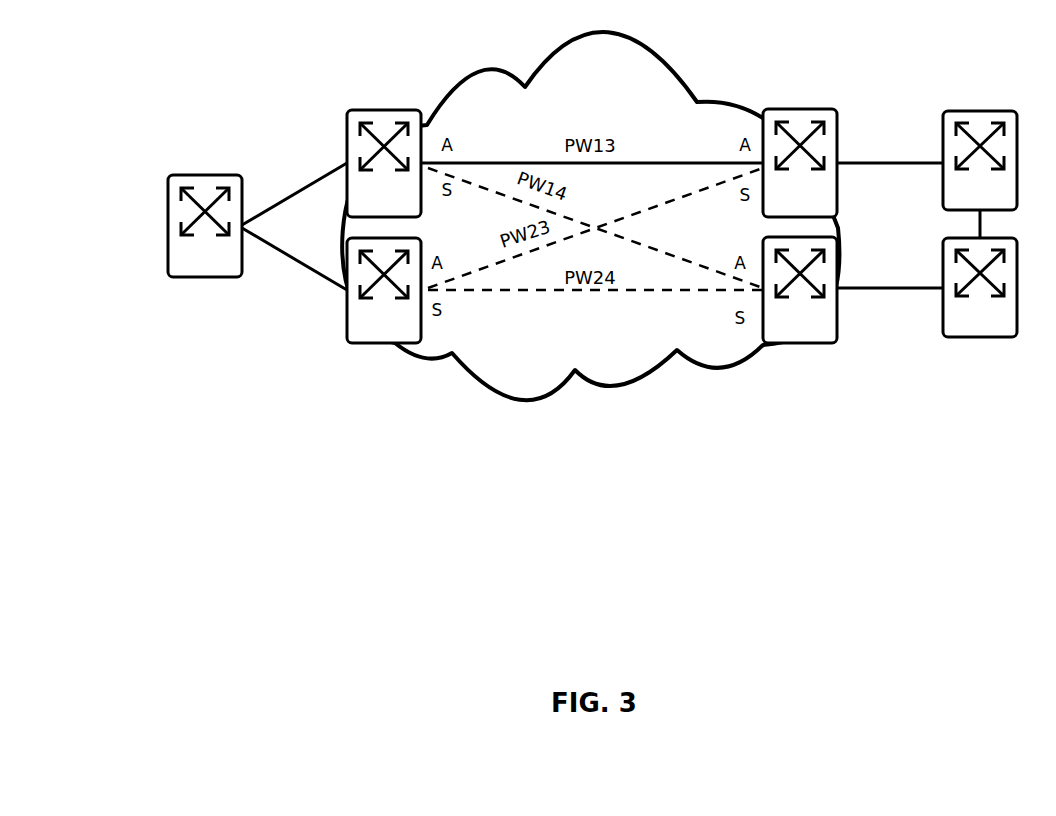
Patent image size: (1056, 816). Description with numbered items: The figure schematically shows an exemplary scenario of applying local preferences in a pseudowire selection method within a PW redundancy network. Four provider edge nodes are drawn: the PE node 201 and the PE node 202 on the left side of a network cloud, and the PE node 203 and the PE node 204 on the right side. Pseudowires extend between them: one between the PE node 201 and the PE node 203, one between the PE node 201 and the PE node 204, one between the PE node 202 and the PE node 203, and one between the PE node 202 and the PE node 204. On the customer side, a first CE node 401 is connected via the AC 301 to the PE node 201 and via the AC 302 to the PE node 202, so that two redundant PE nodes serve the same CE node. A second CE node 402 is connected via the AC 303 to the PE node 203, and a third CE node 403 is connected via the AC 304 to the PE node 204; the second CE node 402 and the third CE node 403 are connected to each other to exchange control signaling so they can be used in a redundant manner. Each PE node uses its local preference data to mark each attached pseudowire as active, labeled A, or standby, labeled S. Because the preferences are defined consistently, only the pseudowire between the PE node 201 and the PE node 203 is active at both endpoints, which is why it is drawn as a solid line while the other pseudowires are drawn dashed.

The PE node 201 is at (370, 108).
The PE node 202 is at (370, 344).
The PE node 203 is at (808, 108).
The PE node 204 is at (810, 344).
The AC 301 is at (292, 194).
The AC 302 is at (303, 265).
The AC 303 is at (870, 162).
The AC 304 is at (875, 289).
The first CE node 401 is at (208, 174).
The second CE node 402 is at (985, 110).
The third CE node 403 is at (983, 338).